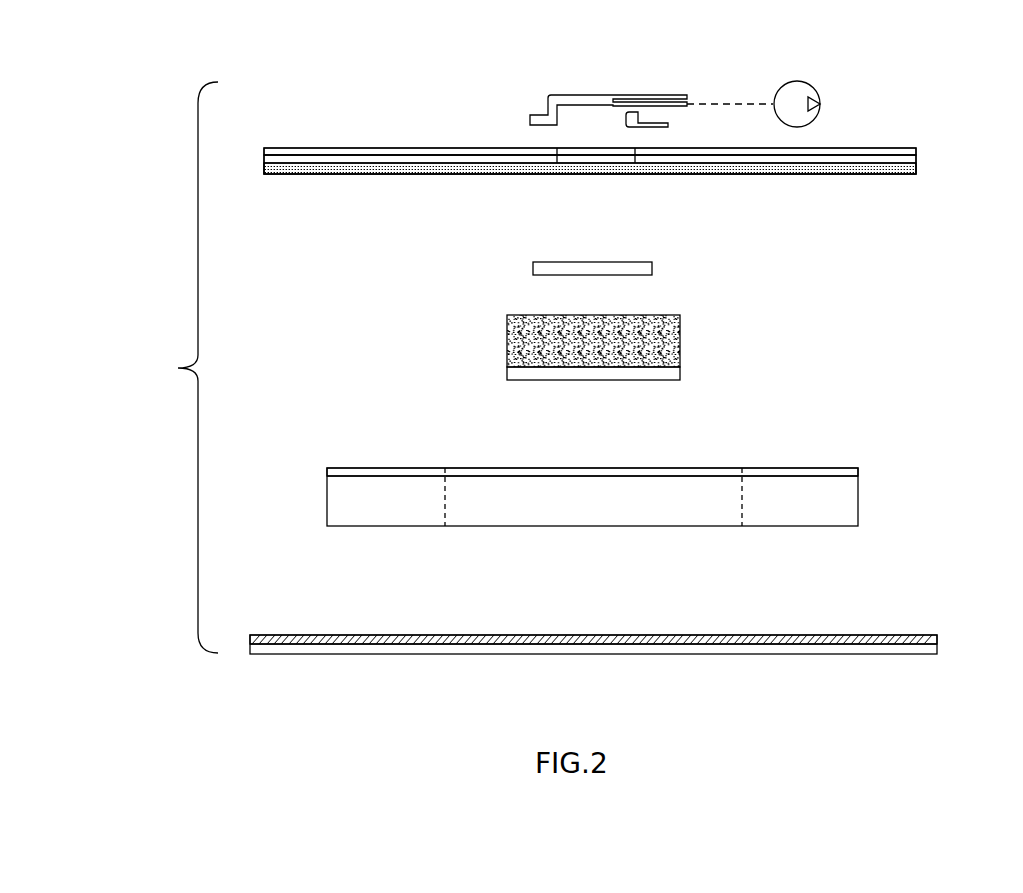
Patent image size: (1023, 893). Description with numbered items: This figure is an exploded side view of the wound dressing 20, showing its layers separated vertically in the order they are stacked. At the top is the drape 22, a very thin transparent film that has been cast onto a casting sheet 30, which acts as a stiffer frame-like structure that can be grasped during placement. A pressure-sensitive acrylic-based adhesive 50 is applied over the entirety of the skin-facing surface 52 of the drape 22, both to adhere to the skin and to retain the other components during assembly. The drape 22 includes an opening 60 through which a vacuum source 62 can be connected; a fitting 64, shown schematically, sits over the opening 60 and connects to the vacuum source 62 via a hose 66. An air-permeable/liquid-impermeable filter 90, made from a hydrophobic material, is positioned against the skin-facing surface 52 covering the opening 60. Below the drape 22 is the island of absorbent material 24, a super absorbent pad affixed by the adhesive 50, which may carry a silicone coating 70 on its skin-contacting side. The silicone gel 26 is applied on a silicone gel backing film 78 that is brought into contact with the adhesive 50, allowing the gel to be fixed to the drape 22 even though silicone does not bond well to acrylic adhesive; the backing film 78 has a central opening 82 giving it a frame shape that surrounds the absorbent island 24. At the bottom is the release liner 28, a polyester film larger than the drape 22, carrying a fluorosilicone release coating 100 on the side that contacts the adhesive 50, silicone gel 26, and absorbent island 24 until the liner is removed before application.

The dressing 20 is at (180, 367).
The drape 22 is at (916, 162).
The island of absorbent material 24 is at (663, 343).
The silicone gel 26 is at (845, 500).
The release liner 28 is at (853, 650).
The casting sheet 30 is at (900, 153).
The pressure-sensitive acrylic-based adhesive 50 is at (868, 174).
The skin-facing surface 52 is at (780, 168).
The opening 60 is at (557, 160).
The vacuum source 62 is at (812, 85).
The fitting 64 is at (572, 97).
The hose 66 is at (737, 103).
The silicone coating 70 is at (655, 373).
The silicone gel backing film 78 is at (837, 473).
The central opening 82 is at (445, 502).
The air-permeable/liquid-impermeable filter 90 is at (617, 268).
The fluorosilicone release coating 100 is at (907, 639).